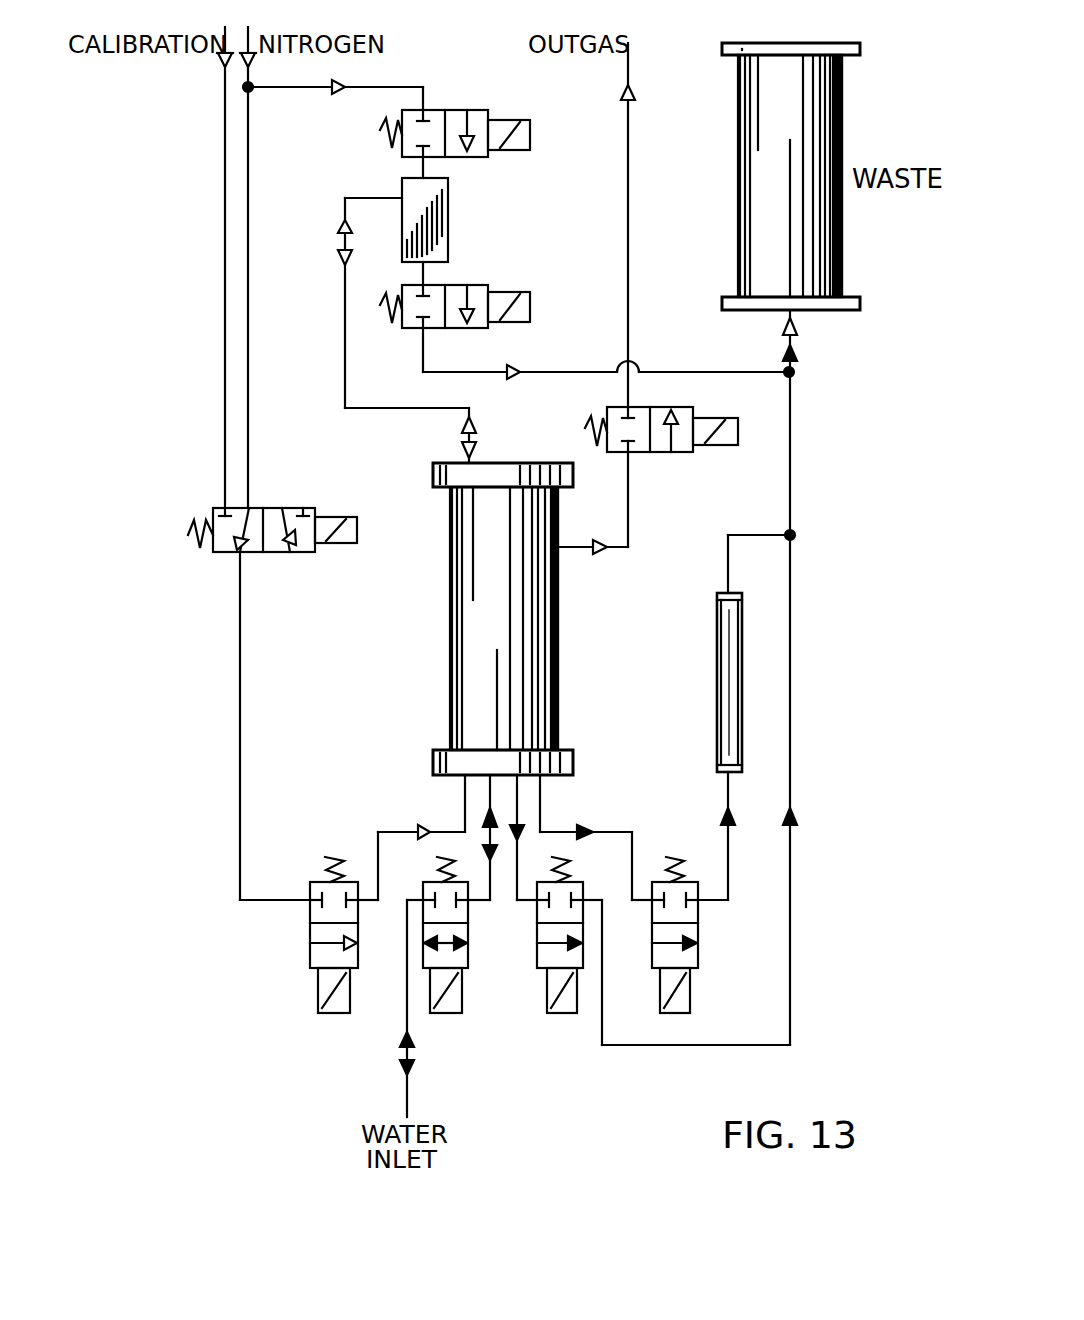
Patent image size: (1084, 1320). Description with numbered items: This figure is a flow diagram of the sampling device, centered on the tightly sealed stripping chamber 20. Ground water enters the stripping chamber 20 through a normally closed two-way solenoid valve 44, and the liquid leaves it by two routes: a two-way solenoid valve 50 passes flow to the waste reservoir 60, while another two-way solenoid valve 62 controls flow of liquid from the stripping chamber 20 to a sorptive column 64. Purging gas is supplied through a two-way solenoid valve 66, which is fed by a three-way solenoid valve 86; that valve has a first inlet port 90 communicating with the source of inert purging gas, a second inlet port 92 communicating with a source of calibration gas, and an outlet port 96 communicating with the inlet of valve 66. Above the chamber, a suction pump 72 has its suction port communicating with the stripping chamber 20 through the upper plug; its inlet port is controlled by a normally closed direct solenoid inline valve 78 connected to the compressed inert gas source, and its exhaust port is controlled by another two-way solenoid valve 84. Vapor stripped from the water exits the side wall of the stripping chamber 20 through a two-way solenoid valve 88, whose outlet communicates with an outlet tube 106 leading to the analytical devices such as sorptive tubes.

The stripping chamber 20 is at (554, 680).
The two-way solenoid valve 44 is at (462, 960).
The two-way solenoid valve 50 is at (686, 1000).
The waste reservoir 60 is at (826, 123).
The two-way solenoid valve 62 is at (552, 1003).
The sorptive column 64 is at (722, 686).
The two-way solenoid valve 66 is at (320, 950).
The suction pump 72 is at (444, 246).
The direct solenoid inline valve 78 is at (468, 114).
The two-way solenoid valve 84 is at (476, 290).
The three-way solenoid valve 86 is at (272, 680).
The two-way solenoid valve 88 is at (684, 452).
The first inlet port 90 is at (250, 512).
The second inlet port 92 is at (283, 509).
The outlet port 96 is at (238, 553).
The outlet tube 106 is at (629, 180).